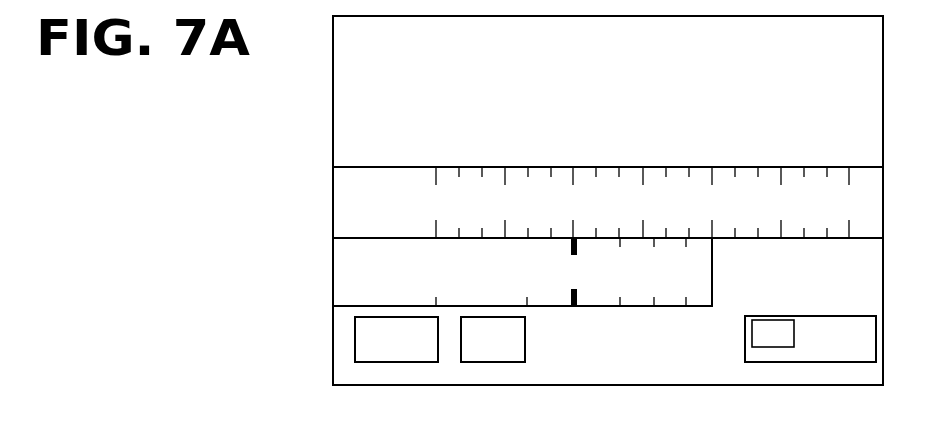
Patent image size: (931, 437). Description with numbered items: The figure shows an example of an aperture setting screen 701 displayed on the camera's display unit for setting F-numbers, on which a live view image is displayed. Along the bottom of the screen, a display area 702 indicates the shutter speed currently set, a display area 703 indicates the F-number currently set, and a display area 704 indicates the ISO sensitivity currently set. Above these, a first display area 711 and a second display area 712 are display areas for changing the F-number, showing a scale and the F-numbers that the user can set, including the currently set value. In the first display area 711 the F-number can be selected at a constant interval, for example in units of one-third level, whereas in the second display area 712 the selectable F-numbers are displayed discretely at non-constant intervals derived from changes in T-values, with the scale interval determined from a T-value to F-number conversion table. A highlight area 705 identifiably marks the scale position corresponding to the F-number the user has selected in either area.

The aperture setting screen 701 is at (333, 103).
The first display area 711 is at (333, 199).
The second display area 712 is at (333, 283).
The highlight area 705 is at (575, 306).
The display area 702 is at (398, 362).
The display area 703 is at (495, 362).
The display area 704 is at (809, 362).